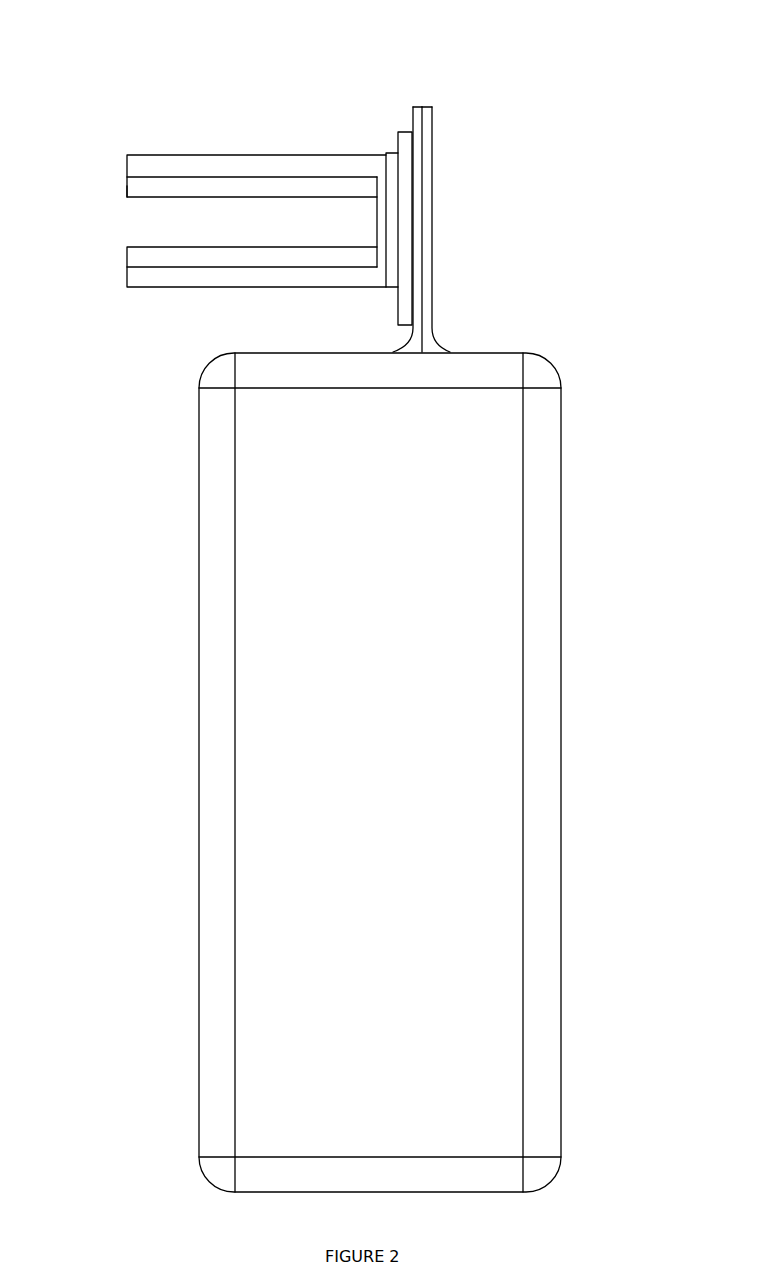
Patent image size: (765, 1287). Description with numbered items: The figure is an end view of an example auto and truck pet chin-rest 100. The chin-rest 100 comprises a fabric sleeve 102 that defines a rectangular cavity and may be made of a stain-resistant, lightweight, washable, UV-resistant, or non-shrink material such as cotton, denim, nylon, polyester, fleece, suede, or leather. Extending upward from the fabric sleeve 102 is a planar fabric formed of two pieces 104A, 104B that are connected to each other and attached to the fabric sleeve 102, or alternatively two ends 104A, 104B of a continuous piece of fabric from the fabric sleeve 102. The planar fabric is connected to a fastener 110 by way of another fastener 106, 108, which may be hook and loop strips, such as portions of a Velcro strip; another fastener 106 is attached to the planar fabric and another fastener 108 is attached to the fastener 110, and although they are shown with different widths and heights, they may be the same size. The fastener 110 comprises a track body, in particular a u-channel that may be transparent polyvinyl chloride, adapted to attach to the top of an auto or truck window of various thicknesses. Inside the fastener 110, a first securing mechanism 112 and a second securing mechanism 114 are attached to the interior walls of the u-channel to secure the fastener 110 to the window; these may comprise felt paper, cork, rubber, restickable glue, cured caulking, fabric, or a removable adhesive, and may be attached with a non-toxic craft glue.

The chin-rest 100 is at (387, 28).
The fabric sleeve 102 is at (550, 484).
The planar fabric piece 104A is at (425, 107).
The planar fabric piece 104B is at (413, 107).
The another fastener 106 is at (399, 132).
The another fastener 108 is at (386, 153).
The fastener 110 is at (210, 155).
The first securing mechanism 112 is at (127, 186).
The second securing mechanism 114 is at (127, 250).